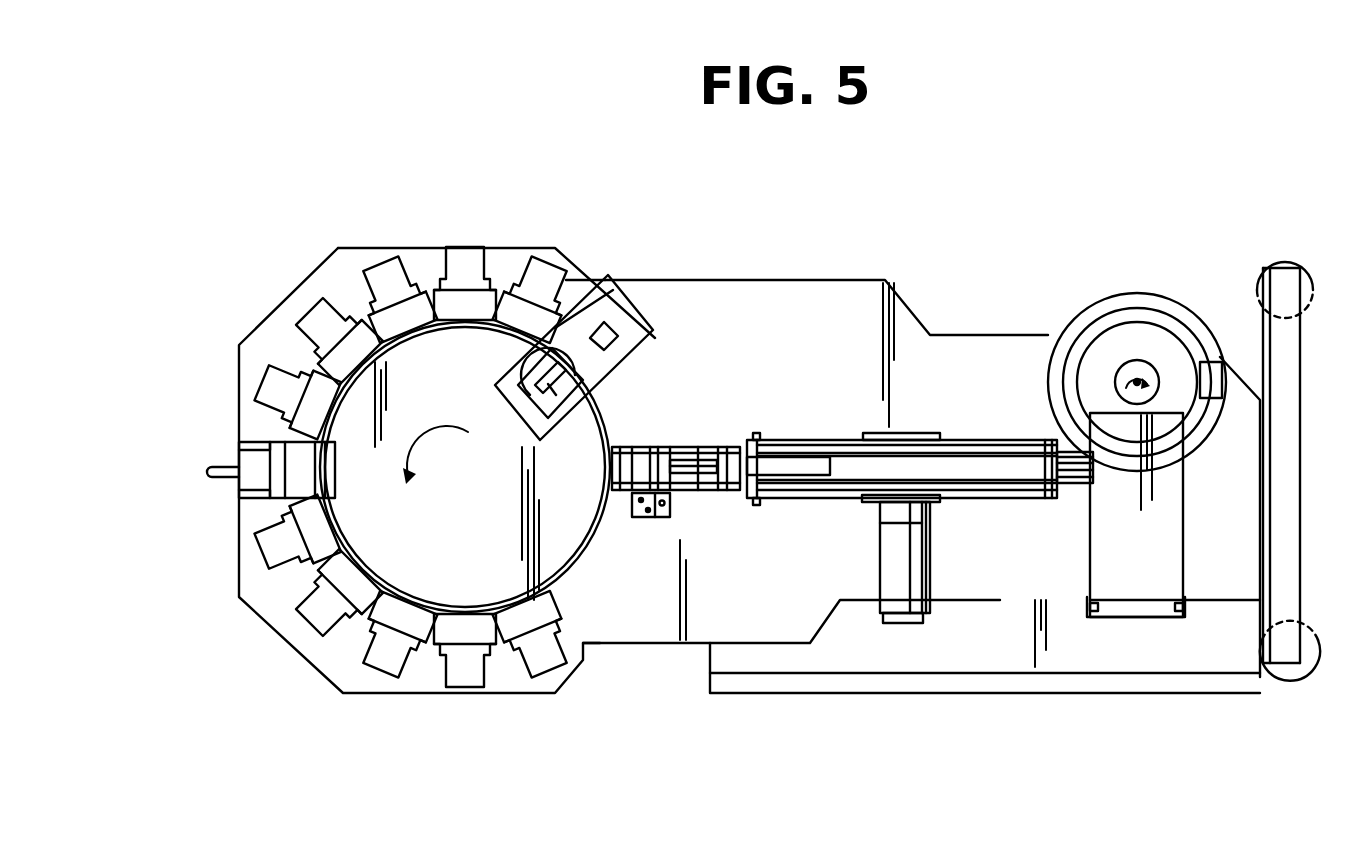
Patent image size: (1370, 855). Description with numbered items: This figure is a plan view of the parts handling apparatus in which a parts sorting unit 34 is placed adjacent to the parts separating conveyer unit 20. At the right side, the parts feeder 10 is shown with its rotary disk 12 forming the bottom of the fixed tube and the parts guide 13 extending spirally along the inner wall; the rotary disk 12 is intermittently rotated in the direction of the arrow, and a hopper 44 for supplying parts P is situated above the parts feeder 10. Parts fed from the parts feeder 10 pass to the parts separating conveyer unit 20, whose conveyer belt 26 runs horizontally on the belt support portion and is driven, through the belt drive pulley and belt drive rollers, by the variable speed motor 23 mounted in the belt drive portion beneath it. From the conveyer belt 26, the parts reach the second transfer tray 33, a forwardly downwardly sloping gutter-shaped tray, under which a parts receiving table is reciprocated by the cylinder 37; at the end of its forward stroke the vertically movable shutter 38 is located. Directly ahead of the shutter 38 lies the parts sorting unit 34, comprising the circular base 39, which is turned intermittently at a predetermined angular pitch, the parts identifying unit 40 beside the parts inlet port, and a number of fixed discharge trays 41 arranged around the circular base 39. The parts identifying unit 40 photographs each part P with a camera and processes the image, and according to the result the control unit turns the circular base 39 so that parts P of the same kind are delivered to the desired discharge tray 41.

The parts feeder 10 is at (746, 498).
The rotary disk 12 is at (1133, 350).
The parts guide 13 is at (1098, 327).
The parts separating conveyer unit 20 is at (920, 500).
The variable speed motor 23 is at (910, 565).
The conveyer belt 26 is at (978, 470).
The second transfer tray 33 is at (703, 452).
The parts sorting unit 34 is at (423, 700).
The cylinder 37 is at (797, 467).
The shutter 38 is at (642, 467).
The circular base 39 is at (404, 410).
The parts identifying unit 40 is at (566, 332).
The fixed discharge trays 41 is at (402, 268).
The hopper 44 is at (1160, 568).
The part P is at (557, 398).